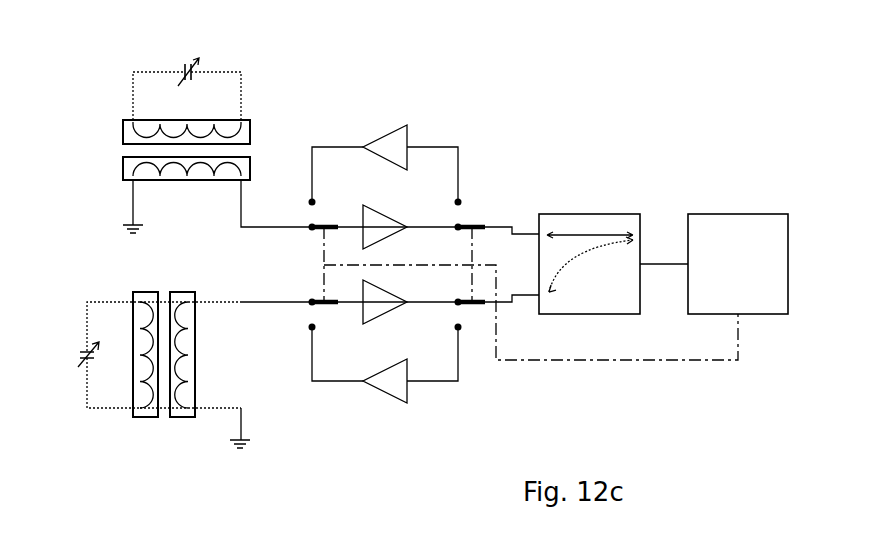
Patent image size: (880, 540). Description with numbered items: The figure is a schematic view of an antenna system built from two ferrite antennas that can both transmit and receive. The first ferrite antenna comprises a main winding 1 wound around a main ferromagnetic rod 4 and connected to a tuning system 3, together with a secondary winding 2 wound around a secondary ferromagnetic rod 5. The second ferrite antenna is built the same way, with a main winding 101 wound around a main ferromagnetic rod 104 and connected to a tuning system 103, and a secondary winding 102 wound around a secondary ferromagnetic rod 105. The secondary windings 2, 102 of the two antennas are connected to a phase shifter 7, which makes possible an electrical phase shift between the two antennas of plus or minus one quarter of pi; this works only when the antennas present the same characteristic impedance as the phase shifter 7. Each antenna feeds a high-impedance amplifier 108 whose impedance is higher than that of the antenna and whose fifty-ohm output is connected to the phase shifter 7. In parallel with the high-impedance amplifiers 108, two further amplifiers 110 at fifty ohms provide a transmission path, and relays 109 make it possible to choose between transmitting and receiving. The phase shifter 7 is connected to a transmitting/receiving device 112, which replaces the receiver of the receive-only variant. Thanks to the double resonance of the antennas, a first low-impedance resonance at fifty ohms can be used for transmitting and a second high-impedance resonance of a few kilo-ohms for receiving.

The main winding 1 is at (145, 298).
The secondary winding 2 is at (182, 298).
The tuning system 3 is at (84, 350).
The main ferromagnetic rod 4 is at (140, 418).
The secondary ferromagnetic rod 5 is at (198, 385).
The phase shifter 7 is at (578, 214).
The main winding 101 is at (252, 126).
The secondary winding 102 is at (236, 170).
The tuning system 103 is at (196, 70).
The main ferromagnetic rod 104 is at (120, 132).
The secondary ferromagnetic rod 105 is at (123, 166).
The high-impedance amplifier 108 is at (383, 213).
The relay 109 is at (474, 249).
The amplifier 110 is at (407, 125).
The transmitting/receiving device 112 is at (725, 214).